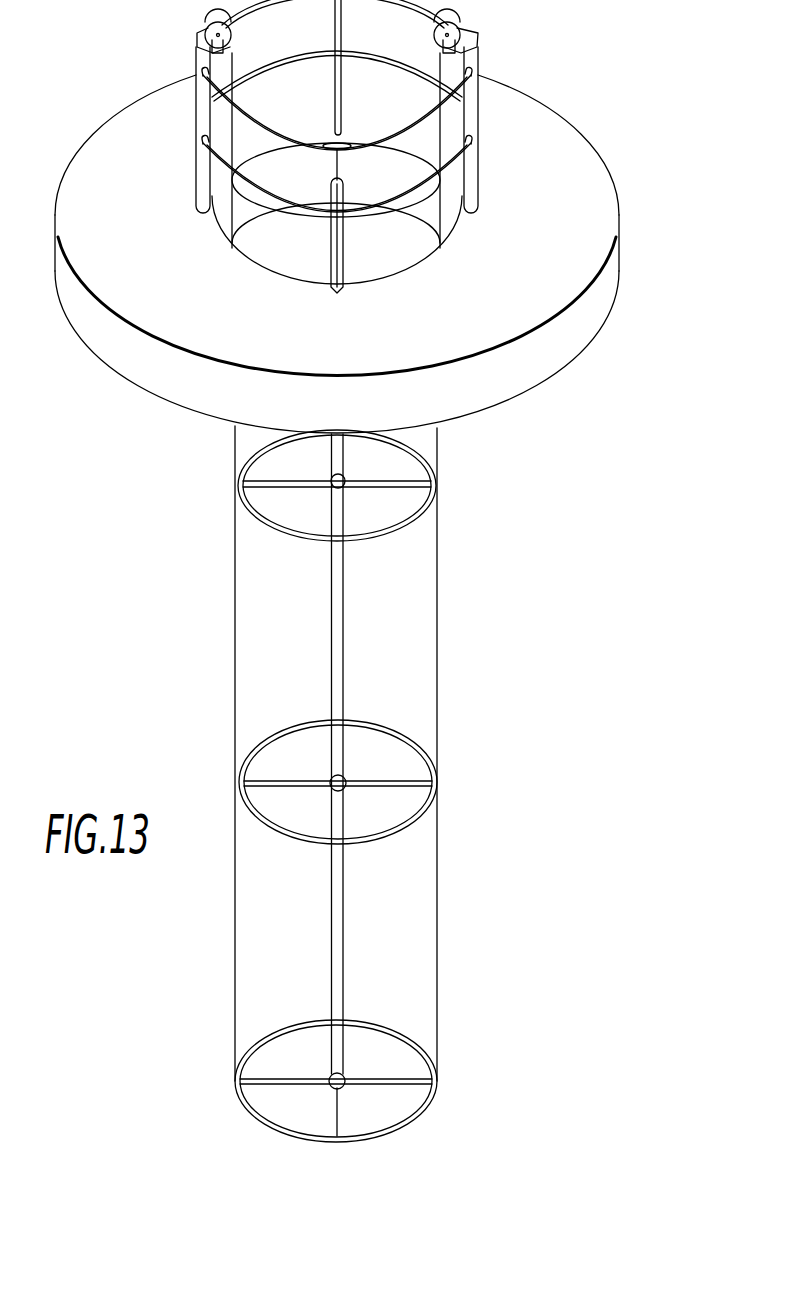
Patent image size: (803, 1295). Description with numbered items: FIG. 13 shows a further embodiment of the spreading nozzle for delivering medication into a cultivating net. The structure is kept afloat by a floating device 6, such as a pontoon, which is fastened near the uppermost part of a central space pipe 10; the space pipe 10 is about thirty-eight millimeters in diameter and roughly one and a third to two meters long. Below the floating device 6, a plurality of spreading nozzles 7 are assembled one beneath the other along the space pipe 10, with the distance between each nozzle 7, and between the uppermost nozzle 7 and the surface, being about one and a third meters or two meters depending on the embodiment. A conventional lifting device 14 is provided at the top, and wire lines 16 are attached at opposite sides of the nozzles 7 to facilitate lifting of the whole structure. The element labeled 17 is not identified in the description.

The floating device 6 is at (608, 279).
The spreading nozzle 7 is at (440, 487).
The space pipe 10 is at (343, 648).
The lifting device 14 is at (468, 28).
The wire lines 16 is at (334, 293).
The net cylinder 17 is at (232, 460).